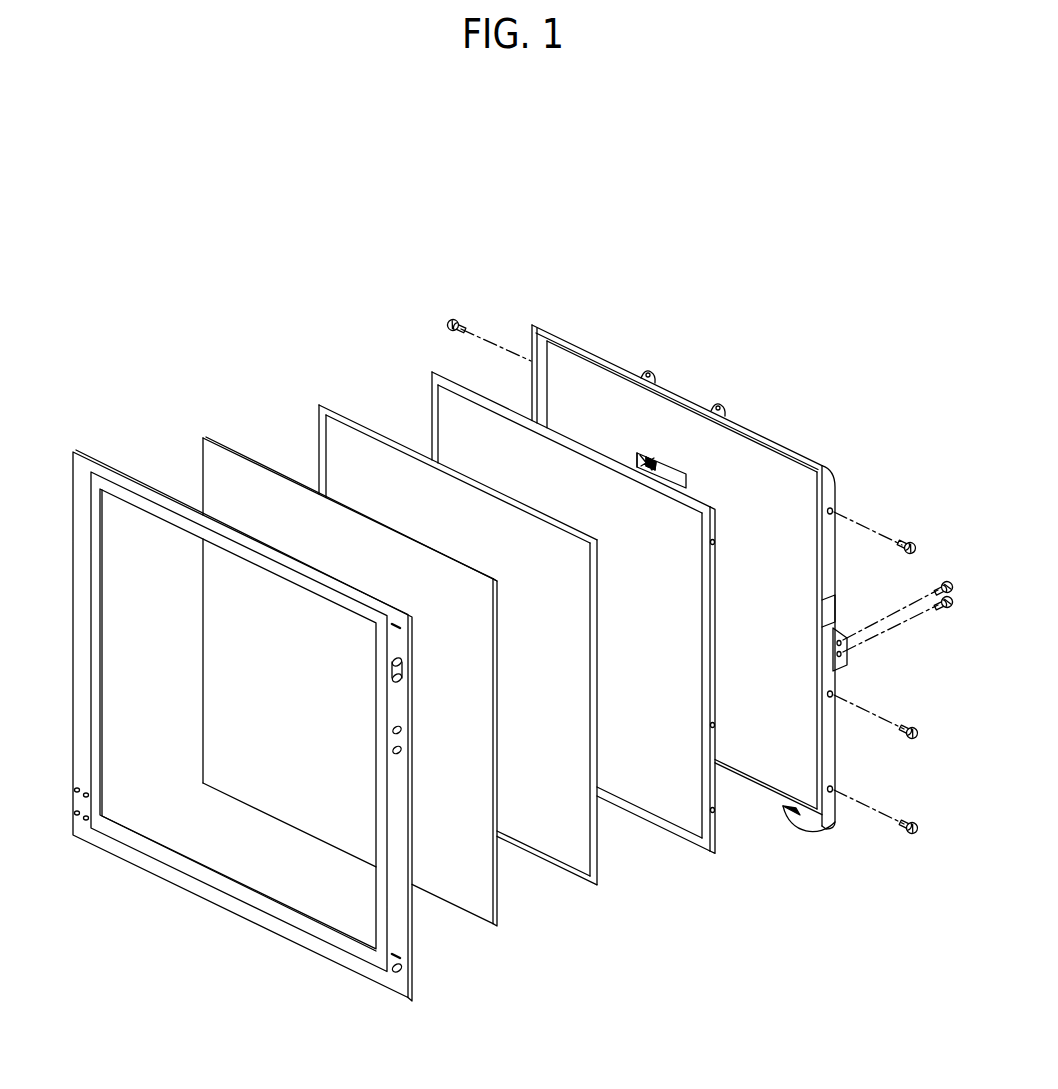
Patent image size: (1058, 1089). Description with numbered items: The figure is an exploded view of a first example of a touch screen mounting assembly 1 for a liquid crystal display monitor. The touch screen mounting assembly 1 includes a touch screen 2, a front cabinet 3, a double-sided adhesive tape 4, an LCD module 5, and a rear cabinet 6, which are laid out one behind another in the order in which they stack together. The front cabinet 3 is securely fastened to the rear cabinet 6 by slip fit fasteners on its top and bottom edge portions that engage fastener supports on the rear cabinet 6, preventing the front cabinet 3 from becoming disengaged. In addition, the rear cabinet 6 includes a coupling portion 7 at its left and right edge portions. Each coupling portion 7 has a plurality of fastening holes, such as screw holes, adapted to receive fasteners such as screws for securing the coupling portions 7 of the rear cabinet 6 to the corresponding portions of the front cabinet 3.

The touch screen mounting assembly 1 is at (370, 349).
The touch screen 2 is at (500, 902).
The front cabinet 3 is at (418, 972).
The double-sided adhesive tape 4 is at (600, 862).
The LCD module 5 is at (720, 830).
The rear cabinet 6 is at (689, 398).
The coupling portion 7 is at (848, 661).